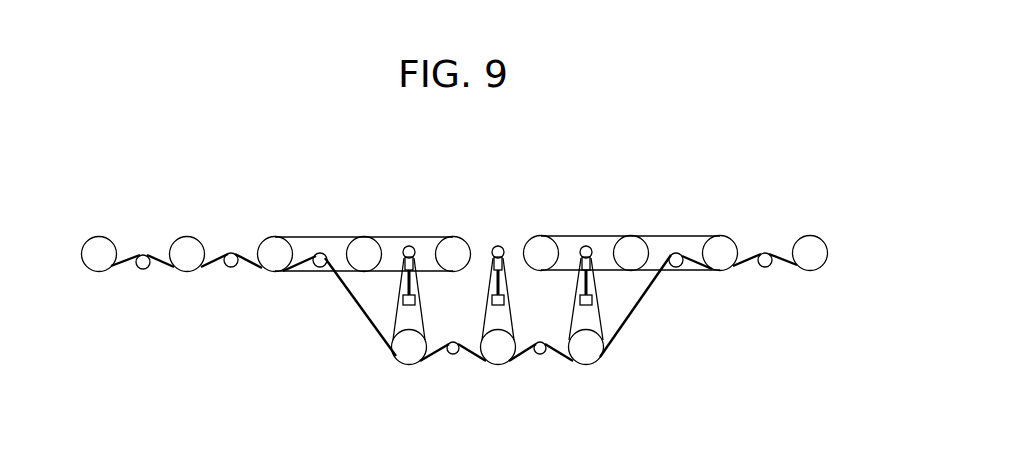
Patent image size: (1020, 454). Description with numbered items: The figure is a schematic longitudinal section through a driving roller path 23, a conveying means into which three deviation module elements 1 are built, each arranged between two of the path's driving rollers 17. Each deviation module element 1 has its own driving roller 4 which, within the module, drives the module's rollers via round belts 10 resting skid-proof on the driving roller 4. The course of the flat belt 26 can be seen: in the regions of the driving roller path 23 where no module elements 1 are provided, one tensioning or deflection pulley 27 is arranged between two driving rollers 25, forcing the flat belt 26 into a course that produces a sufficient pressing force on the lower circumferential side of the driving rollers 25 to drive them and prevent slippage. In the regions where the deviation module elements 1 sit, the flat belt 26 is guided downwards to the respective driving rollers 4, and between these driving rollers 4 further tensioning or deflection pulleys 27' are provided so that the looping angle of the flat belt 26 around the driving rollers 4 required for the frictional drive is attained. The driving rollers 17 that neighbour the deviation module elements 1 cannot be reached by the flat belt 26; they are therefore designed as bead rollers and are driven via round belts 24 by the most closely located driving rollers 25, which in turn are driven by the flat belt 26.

The deviation module element 1 is at (494, 230).
The driving roller 4 is at (409, 349).
The round belt 10 is at (600, 313).
The driving roller 17 is at (453, 247).
The driving roller path 23 is at (832, 205).
The round belt 24 is at (667, 237).
The driving roller 25 is at (273, 252).
The flat belt 26 is at (350, 300).
The tensioning or deflection pulley 27 is at (470, 308).
The tensioning or deflection pulley 27' is at (499, 386).